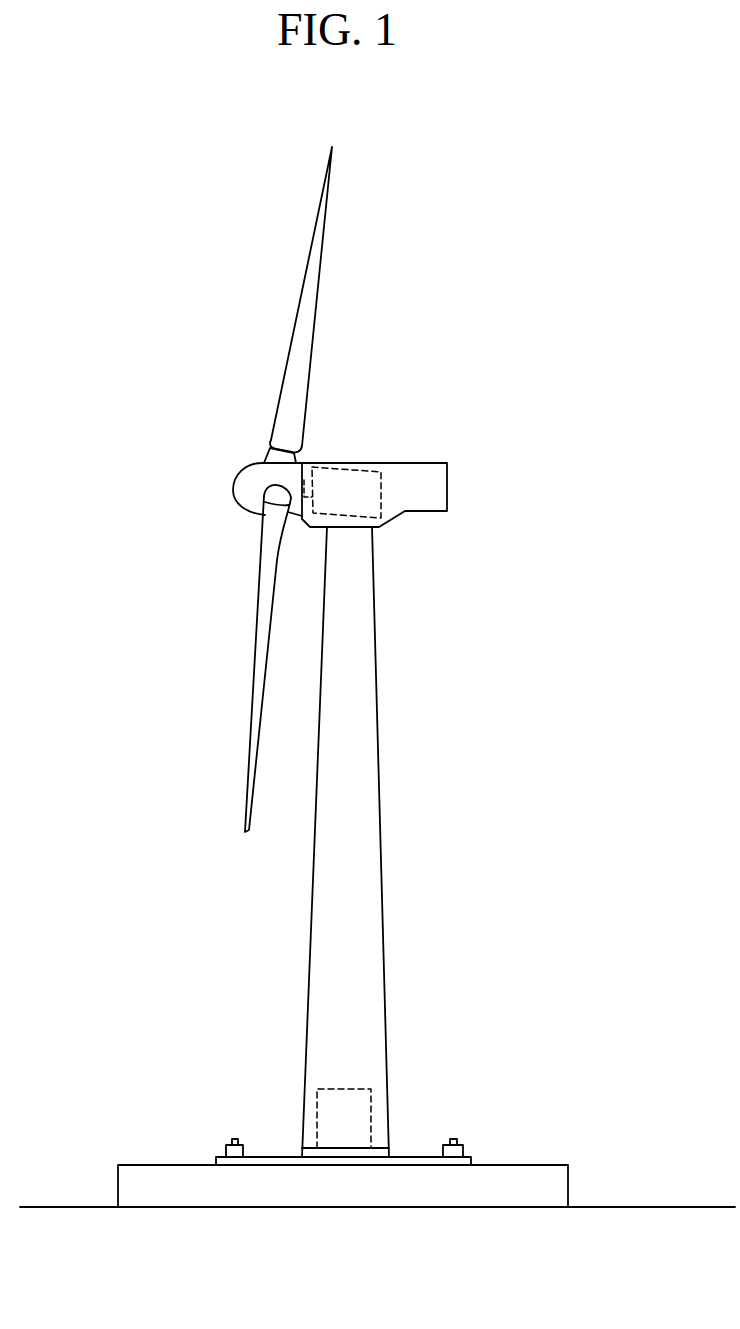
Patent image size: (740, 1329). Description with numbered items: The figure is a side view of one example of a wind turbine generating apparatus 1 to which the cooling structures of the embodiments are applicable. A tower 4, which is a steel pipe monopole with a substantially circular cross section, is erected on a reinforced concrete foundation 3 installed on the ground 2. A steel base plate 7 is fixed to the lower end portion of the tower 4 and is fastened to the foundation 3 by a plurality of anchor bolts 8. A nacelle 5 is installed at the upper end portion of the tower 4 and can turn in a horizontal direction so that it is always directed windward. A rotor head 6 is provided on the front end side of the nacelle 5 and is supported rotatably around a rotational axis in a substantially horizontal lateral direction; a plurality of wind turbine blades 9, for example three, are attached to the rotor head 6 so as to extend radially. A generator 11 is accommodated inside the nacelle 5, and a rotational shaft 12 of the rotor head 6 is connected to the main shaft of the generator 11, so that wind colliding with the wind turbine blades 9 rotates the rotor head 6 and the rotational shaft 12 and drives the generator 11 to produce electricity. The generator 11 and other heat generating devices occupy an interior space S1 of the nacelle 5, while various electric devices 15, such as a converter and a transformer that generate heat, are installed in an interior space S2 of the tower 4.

The wind turbine generating apparatus 1 is at (486, 399).
The ground 2 is at (613, 1207).
The foundation 3 is at (528, 1165).
The tower 4 is at (373, 695).
The nacelle 5 is at (356, 463).
The rotor head 6 is at (236, 482).
The base plate 7 is at (265, 1153).
The anchor bolts 8 is at (228, 1141).
The wind turbine blades 9 is at (323, 229).
The generator 11 is at (380, 504).
The rotational shaft 12 is at (307, 527).
The electric devices 15 is at (340, 1089).
The interior space of the nacelle S1 is at (428, 482).
The interior space of the tower S2 is at (343, 932).